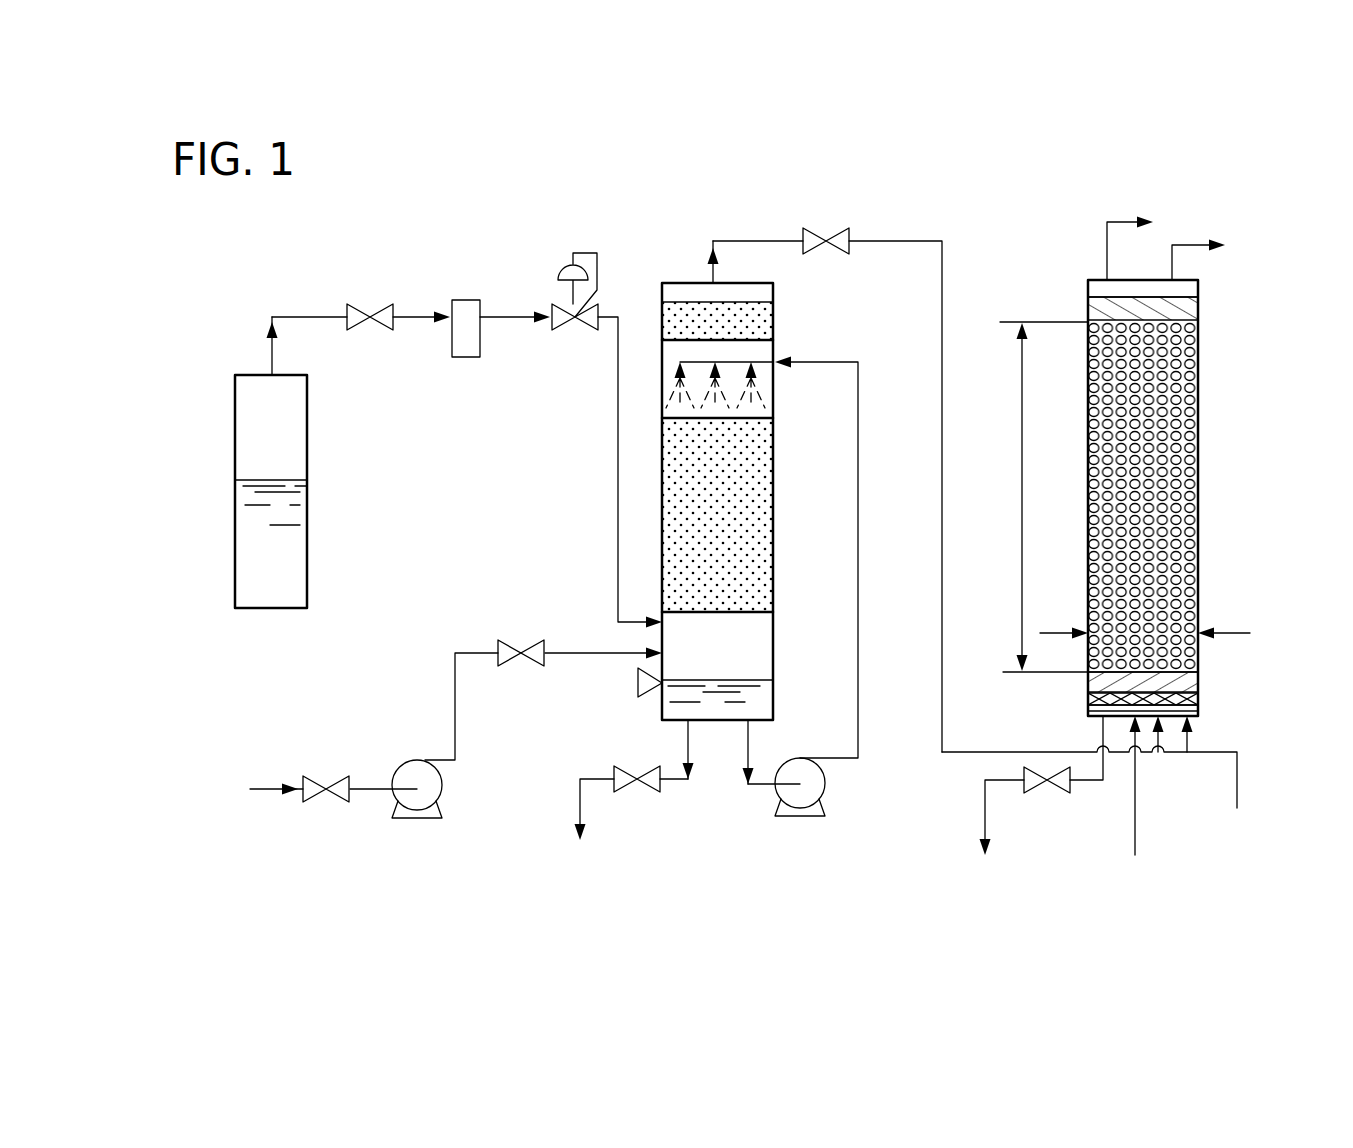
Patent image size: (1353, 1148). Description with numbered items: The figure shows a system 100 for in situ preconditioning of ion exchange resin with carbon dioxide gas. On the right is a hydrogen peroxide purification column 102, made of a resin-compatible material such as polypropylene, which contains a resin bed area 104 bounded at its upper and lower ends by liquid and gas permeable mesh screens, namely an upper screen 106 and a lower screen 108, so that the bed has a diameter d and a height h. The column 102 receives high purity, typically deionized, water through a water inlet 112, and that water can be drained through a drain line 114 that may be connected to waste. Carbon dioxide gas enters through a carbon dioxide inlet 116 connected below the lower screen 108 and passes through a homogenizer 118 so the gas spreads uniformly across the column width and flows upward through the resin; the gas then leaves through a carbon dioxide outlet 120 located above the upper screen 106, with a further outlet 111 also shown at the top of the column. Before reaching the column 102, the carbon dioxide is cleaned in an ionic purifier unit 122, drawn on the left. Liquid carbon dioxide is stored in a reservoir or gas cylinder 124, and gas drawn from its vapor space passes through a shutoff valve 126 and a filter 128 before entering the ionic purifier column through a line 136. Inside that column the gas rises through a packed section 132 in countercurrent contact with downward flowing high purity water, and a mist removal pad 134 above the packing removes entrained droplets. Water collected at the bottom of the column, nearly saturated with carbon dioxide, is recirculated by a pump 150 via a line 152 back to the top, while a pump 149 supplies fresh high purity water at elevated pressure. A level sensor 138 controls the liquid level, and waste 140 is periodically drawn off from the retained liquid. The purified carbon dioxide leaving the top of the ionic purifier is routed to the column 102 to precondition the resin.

The system 100 is at (730, 122).
The hydrogen peroxide purification column 102 is at (1200, 450).
The resin bed area 104 is at (1185, 530).
The upper screen 106 is at (1200, 300).
The lower screen 108 is at (1200, 680).
The outlet 111 is at (1198, 246).
The water inlet 112 is at (1190, 712).
The drain line 114 is at (1042, 785).
The carbon dioxide inlet 116 is at (1089, 785).
The homogenizer 118 is at (1087, 699).
The carbon dioxide outlet 120 is at (776, 457).
The ionic purifier unit 122 is at (688, 236).
The reservoir or gas cylinder 124 is at (235, 428).
The shutoff valve 126 is at (380, 305).
The filter 128 is at (466, 300).
The packed section 132 is at (760, 530).
The mist removal pad 134 is at (776, 316).
The line 136 is at (519, 308).
The level sensor 138 is at (632, 692).
The waste 140 is at (626, 819).
The pump 149 is at (402, 761).
The pump 150 is at (826, 796).
The line 152 is at (860, 490).